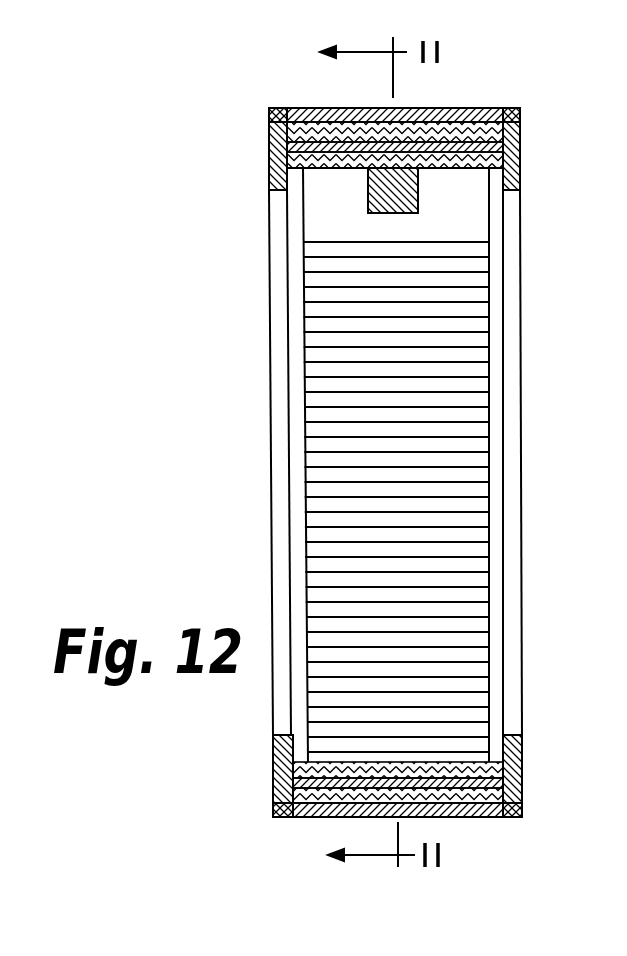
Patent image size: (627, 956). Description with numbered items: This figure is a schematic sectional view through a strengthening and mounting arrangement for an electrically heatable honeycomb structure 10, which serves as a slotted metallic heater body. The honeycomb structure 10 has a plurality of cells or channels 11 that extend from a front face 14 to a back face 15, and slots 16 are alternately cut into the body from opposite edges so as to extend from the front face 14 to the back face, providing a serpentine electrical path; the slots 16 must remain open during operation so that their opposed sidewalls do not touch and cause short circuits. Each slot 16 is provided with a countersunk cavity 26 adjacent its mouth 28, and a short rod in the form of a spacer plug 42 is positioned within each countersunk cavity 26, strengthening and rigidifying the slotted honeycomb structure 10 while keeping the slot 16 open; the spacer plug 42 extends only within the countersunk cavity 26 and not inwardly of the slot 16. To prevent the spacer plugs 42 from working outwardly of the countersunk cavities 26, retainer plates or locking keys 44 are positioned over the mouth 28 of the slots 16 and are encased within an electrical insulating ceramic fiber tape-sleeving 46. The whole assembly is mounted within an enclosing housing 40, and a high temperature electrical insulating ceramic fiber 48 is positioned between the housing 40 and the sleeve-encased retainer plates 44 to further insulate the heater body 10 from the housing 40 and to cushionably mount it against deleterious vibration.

The honeycomb structure 10 is at (448, 465).
The cells 11 is at (460, 637).
The front face 14 is at (300, 512).
The back face 15 is at (492, 483).
The slots 16 is at (472, 195).
The countersunk cavity 26 is at (383, 210).
The mouth 28 is at (372, 150).
The housing 40 is at (493, 108).
The spacer plug 42 is at (415, 195).
The retainer plates 44 is at (330, 170).
The ceramic fiber tape-sleeving 46 is at (290, 145).
The ceramic fiber 48 is at (448, 127).